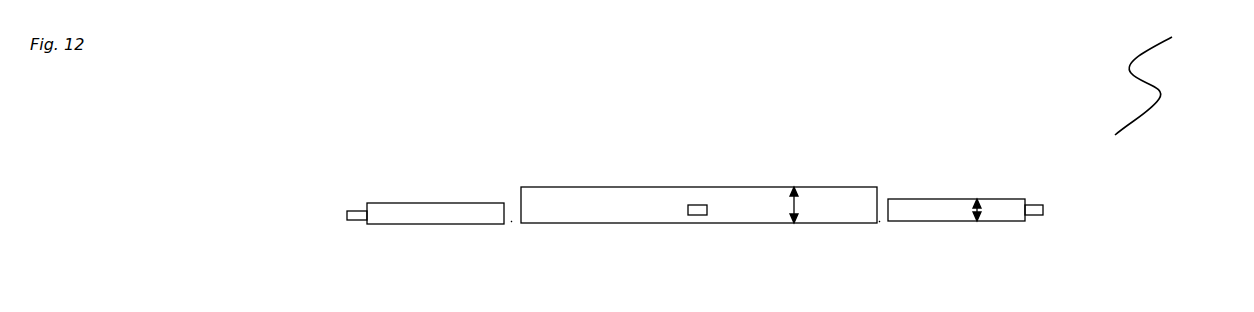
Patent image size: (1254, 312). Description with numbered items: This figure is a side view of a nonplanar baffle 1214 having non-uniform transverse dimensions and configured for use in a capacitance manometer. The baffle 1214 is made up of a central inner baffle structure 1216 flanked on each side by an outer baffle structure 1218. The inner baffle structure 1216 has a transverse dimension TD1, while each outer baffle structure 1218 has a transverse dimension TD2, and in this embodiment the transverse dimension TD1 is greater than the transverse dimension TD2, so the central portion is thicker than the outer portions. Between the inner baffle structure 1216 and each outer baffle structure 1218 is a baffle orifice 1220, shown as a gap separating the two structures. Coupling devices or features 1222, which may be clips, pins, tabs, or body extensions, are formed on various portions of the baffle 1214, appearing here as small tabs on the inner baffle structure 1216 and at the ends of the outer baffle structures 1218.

The nonplanar baffle 1214 is at (1170, 77).
The inner baffle structure 1216 is at (720, 187).
The outer baffle structure 1218 is at (442, 202).
The baffle orifice 1220 is at (512, 220).
The coupling device or feature 1222 is at (356, 212).
The transverse dimension of inner baffle structure TD1 is at (797, 207).
The transverse dimension of outer baffle structure TD2 is at (985, 210).